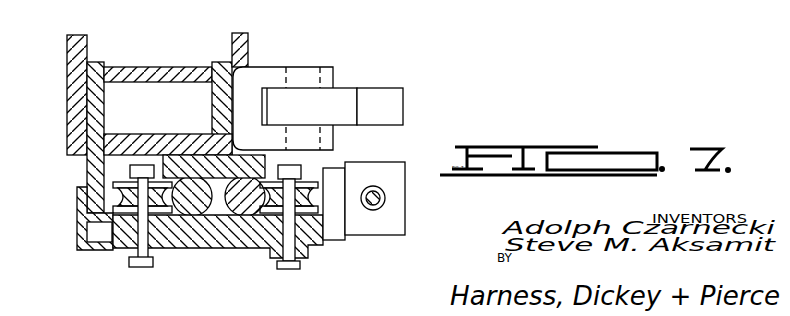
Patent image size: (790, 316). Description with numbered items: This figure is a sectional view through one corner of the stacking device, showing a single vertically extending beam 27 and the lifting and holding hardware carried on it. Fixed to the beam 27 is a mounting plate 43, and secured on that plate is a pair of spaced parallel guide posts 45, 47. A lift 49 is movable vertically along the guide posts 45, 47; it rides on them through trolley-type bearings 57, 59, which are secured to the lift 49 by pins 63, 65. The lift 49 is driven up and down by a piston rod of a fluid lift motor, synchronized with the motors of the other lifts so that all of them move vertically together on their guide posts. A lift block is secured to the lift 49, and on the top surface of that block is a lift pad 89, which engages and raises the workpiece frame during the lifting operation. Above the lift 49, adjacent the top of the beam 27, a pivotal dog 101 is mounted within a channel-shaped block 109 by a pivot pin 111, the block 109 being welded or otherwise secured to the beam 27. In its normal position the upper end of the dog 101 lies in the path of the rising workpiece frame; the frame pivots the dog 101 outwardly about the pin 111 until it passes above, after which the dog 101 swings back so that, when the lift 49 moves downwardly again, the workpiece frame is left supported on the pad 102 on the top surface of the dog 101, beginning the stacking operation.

The beam 27 is at (134, 70).
The mounting plate 43 is at (158, 150).
The guide post 45 is at (200, 214).
The guide post 47 is at (242, 214).
The lift 49 is at (172, 250).
The trolley-type bearing 57 is at (113, 189).
The trolley-type bearing 59 is at (316, 182).
The pin 63 is at (140, 226).
The pin 65 is at (305, 262).
The lift pad 89 is at (400, 171).
The dog 101 is at (345, 88).
The pad 102 is at (393, 102).
The channel-shaped block 109 is at (265, 66).
The pivot pin 111 is at (323, 44).